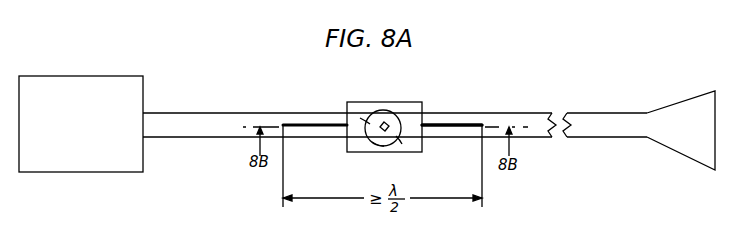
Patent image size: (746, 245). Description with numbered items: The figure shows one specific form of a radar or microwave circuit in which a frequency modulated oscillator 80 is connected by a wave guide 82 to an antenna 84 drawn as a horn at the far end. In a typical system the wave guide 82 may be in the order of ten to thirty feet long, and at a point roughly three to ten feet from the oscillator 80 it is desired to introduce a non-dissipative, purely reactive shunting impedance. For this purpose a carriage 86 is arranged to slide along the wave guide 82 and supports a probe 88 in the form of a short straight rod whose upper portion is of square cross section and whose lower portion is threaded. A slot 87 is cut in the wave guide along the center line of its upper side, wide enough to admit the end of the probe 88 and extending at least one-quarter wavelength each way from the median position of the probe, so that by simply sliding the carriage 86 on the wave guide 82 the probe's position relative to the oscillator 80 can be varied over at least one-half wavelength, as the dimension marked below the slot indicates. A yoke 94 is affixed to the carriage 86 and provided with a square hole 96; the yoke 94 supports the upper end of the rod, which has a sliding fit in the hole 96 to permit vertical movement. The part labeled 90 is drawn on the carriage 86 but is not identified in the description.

The frequency modulated oscillator 80 is at (73, 79).
The wave guide 82 is at (200, 112).
The antenna 84 is at (682, 155).
The carriage 86 is at (368, 102).
The slot 87 is at (446, 126).
The probe 88 is at (387, 123).
The coupling loop 90 is at (377, 144).
The yoke 94 is at (360, 122).
The square hole 96 is at (399, 140).